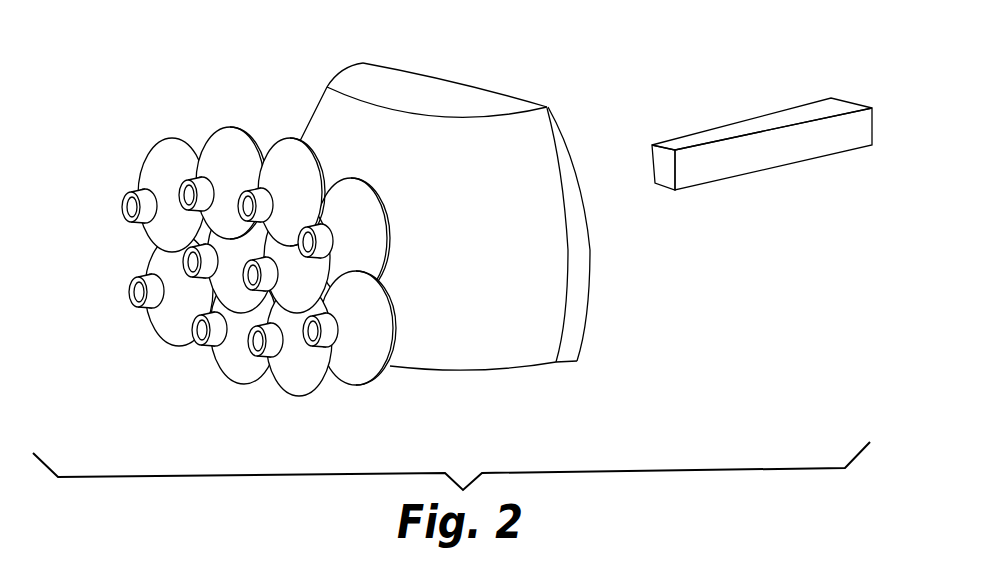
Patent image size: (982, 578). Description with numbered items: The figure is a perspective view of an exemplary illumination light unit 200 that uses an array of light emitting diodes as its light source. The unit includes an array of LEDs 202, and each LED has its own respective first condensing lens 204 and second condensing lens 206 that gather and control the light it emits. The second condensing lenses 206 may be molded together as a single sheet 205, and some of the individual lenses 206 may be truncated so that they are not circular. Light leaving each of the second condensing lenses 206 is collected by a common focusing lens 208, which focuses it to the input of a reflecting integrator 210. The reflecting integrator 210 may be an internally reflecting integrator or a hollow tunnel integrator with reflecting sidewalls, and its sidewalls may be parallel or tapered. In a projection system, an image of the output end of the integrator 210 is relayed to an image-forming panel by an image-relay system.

The illumination light unit 200 is at (262, 60).
The LED 202 is at (128, 210).
The first condensing lens 204 is at (163, 315).
The single sheet 205 is at (220, 133).
The second condensing lens 206 is at (297, 375).
The common focusing lens 208 is at (500, 347).
The reflecting integrator 210 is at (772, 158).